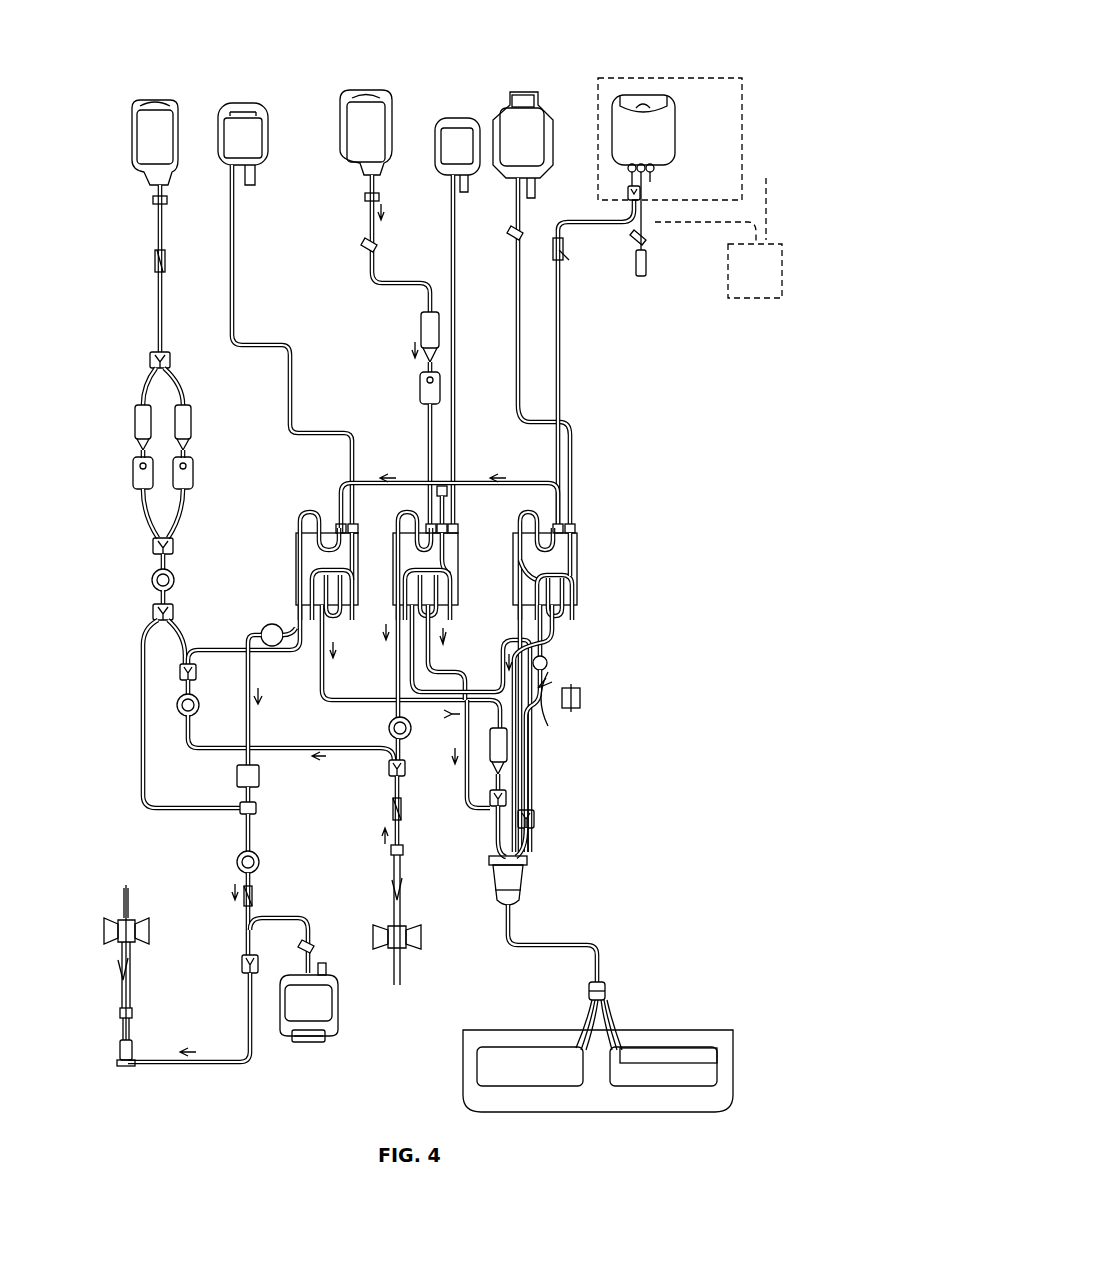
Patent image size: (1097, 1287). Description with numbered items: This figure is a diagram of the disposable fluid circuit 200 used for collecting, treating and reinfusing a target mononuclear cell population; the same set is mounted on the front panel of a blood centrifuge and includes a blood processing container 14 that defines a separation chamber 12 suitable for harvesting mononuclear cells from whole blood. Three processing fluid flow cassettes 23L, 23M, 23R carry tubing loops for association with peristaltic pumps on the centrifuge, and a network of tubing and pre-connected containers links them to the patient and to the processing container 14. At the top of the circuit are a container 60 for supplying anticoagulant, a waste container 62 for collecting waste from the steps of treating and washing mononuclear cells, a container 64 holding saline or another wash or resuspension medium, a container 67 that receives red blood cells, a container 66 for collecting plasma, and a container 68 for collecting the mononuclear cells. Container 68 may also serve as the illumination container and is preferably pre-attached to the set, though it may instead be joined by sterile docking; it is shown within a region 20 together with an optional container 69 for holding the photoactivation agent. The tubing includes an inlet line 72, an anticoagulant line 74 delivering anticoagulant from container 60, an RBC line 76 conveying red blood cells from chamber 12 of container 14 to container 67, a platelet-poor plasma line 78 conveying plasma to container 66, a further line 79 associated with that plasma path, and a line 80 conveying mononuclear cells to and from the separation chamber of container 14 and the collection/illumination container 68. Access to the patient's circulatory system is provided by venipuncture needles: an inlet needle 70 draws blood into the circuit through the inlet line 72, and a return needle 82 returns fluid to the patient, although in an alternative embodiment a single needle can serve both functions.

The fluid circuit 200 is at (775, 42).
The container for holding saline 64 is at (178, 112).
The waste container 62 is at (263, 122).
The container for supplying anticoagulant 60 is at (375, 100).
The container 67 is at (455, 135).
The container for collecting plasma 66 is at (536, 115).
The container for collecting the mononuclear cells 68 is at (666, 143).
The platelet storage region 20 is at (725, 162).
The container for holding the photoactivation agent 69 is at (778, 258).
The anticoagulant line 74 is at (396, 287).
The RBC line 76 is at (455, 445).
The platelet-poor plasma line 78 is at (520, 318).
The tubing 79 is at (578, 470).
The line 80 is at (568, 360).
The processing fluid flow cassette 23L is at (295, 560).
The processing fluid flow cassette 23M is at (458, 548).
The processing fluid flow cassette 23R is at (578, 556).
The inlet line 72 is at (400, 842).
The inlet needle 70 is at (400, 962).
The return needle 82 is at (126, 905).
The chamber 12 is at (670, 1057).
The blood processing container 14 is at (733, 1064).